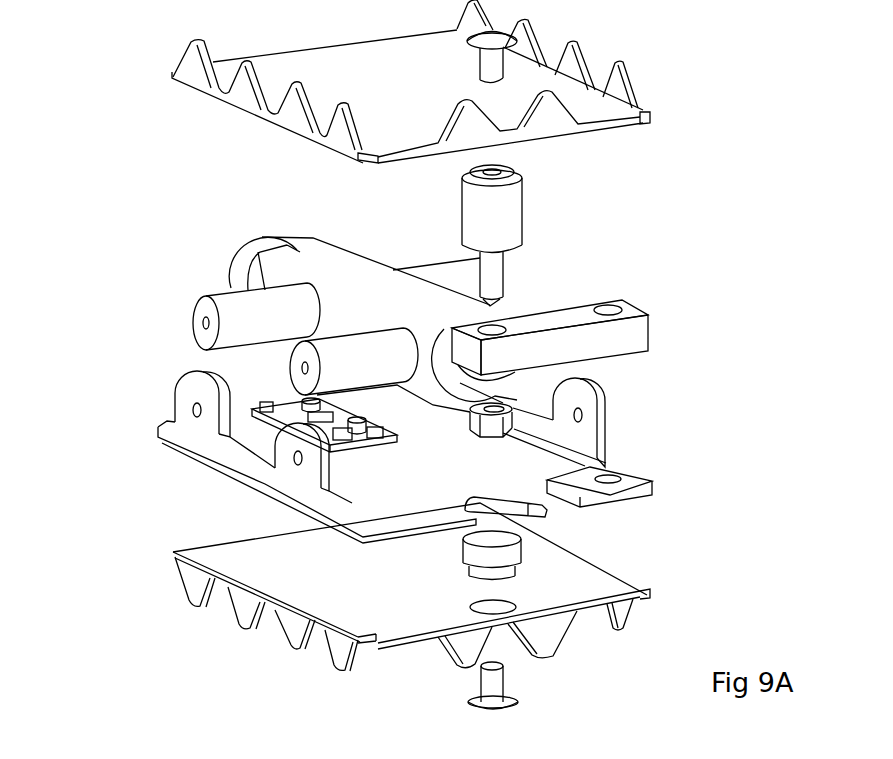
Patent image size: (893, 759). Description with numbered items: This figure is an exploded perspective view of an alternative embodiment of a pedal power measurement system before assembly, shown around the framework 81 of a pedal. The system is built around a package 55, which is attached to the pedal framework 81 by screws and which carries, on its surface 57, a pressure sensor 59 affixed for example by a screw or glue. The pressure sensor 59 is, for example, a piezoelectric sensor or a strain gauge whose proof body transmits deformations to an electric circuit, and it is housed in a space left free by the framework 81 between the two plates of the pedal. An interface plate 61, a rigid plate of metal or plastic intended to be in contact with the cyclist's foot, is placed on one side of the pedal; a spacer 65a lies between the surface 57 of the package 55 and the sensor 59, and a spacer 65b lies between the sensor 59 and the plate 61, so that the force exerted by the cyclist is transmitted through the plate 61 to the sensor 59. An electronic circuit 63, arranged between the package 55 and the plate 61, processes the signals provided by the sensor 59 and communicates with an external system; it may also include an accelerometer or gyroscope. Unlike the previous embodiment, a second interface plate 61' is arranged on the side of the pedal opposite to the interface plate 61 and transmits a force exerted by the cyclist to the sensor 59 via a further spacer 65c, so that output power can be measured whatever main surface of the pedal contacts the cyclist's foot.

The interface plate 61 is at (395, 81).
The framework of a pedal 81 is at (313, 257).
The spacer 65b is at (493, 212).
The pressure sensor 59 is at (572, 337).
The electronic circuit 63 is at (297, 413).
The spacer 65a is at (493, 427).
The package 55 is at (225, 458).
The surface of package 57 is at (498, 477).
The spacer 65c is at (513, 556).
The second interface plate 61' is at (411, 606).